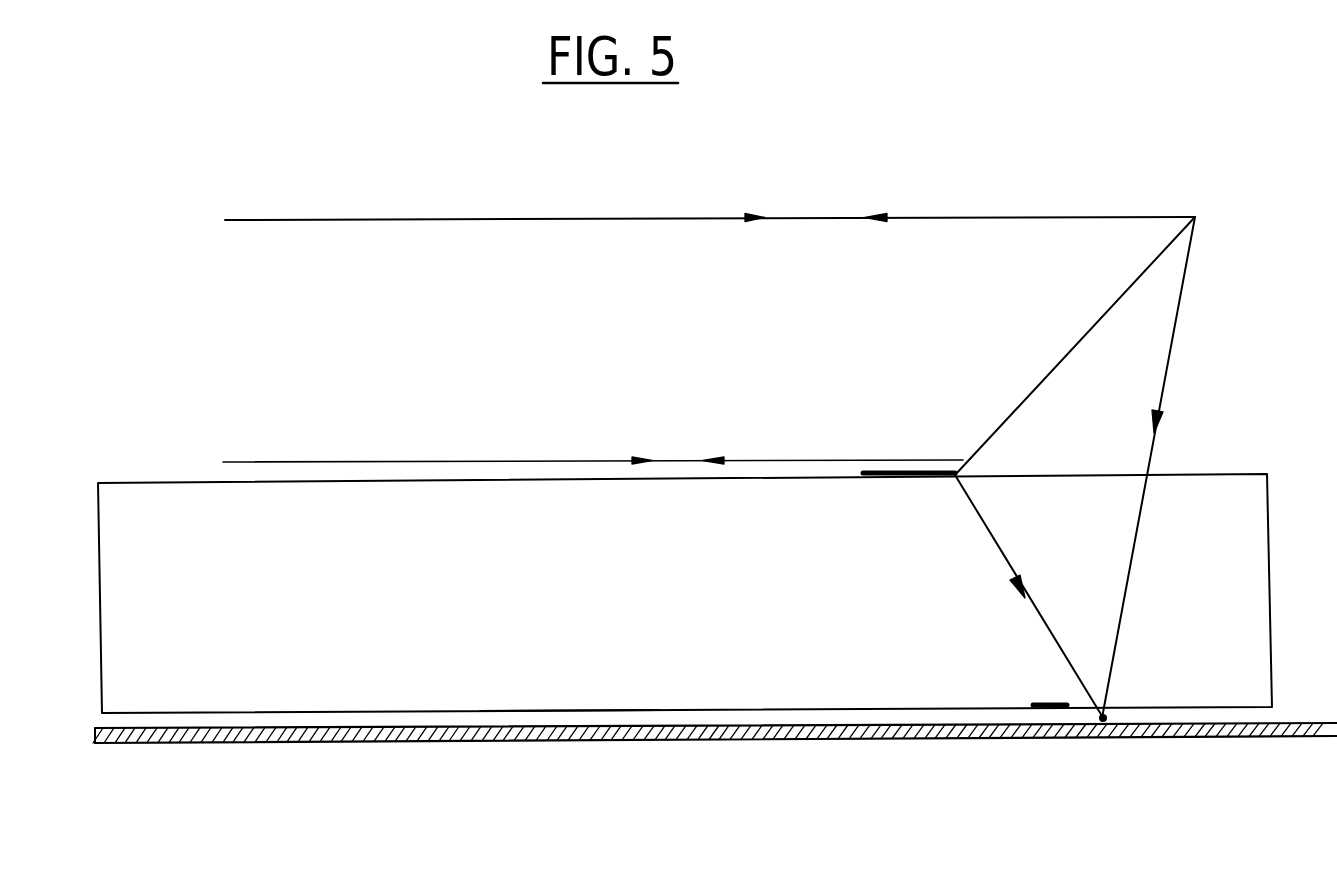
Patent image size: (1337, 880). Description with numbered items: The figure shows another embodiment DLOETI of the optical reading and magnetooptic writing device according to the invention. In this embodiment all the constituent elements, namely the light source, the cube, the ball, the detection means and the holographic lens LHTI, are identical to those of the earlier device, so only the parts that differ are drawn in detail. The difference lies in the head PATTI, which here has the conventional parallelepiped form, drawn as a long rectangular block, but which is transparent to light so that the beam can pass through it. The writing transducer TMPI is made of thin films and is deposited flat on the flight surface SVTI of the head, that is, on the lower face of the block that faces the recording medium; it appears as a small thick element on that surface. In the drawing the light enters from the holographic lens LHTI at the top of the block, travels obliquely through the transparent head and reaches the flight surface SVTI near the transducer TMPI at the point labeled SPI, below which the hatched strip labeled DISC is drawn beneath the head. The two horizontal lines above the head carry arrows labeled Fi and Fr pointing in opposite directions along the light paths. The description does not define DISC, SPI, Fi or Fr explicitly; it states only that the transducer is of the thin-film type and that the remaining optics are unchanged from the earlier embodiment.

The optical reading and magnetooptic writing device DLOETI is at (388, 200).
The holographic lens LHTI is at (1079, 334).
The flight surface SVTI is at (830, 709).
The writing transducer TMPI is at (1048, 701).
The head PATTI is at (568, 711).
The disc DISC is at (263, 736).
The spot / point of incidence SPI is at (1105, 722).
The incident direction arrow Fi is at (697, 321).
The reflected direction arrow Fr is at (798, 321).